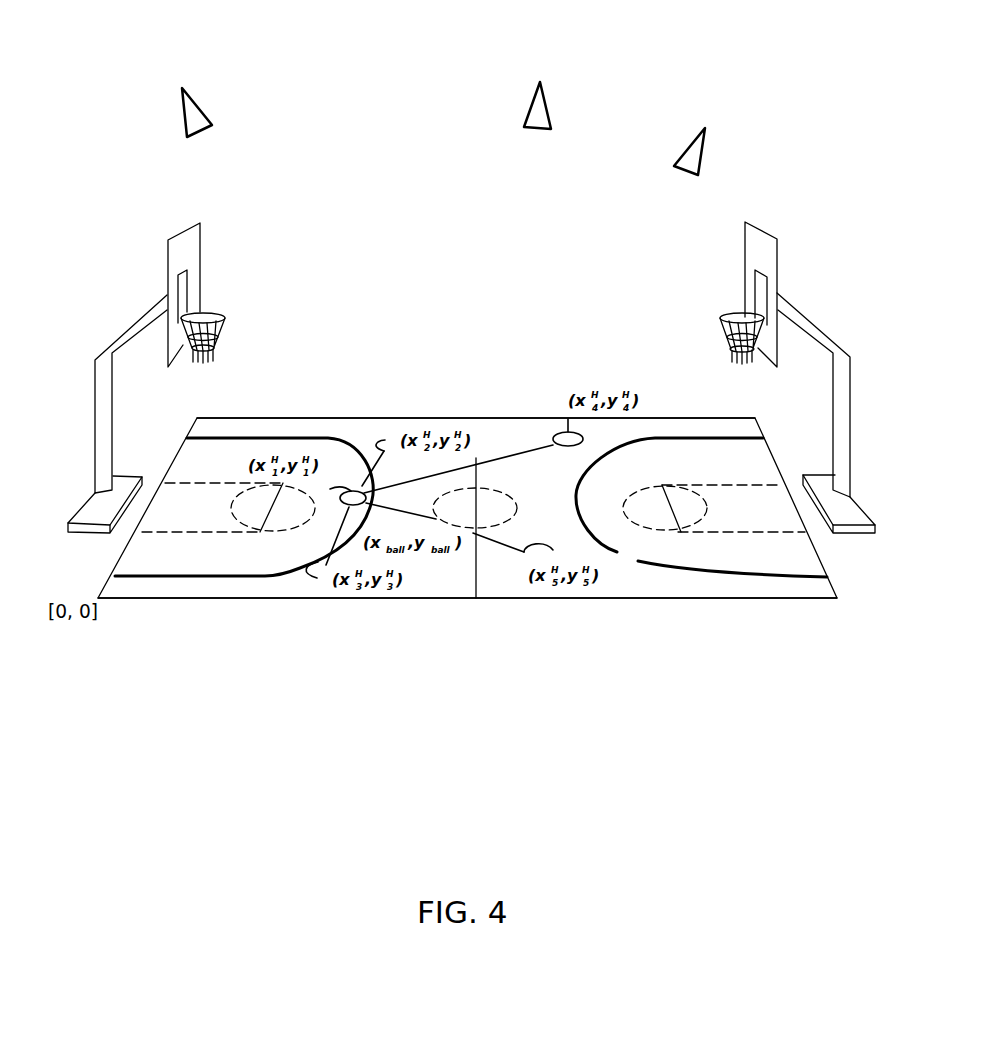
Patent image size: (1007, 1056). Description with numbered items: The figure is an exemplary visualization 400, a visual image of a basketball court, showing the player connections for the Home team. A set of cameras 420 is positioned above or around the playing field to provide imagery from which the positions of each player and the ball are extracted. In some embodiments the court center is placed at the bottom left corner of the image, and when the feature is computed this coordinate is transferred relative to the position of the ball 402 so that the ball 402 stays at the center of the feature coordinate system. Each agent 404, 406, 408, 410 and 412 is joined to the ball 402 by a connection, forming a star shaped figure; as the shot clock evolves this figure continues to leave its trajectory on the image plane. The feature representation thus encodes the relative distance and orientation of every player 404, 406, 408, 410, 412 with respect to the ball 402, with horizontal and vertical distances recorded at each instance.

The visualization 400 is at (303, 720).
The ball 402 is at (352, 443).
The agent (player) 404 is at (335, 443).
The agent (player) 406 is at (397, 417).
The agent (player) 408 is at (318, 600).
The agent (player) 410 is at (562, 380).
The agent (player) 412 is at (520, 597).
The set of cameras 420 is at (193, 114).